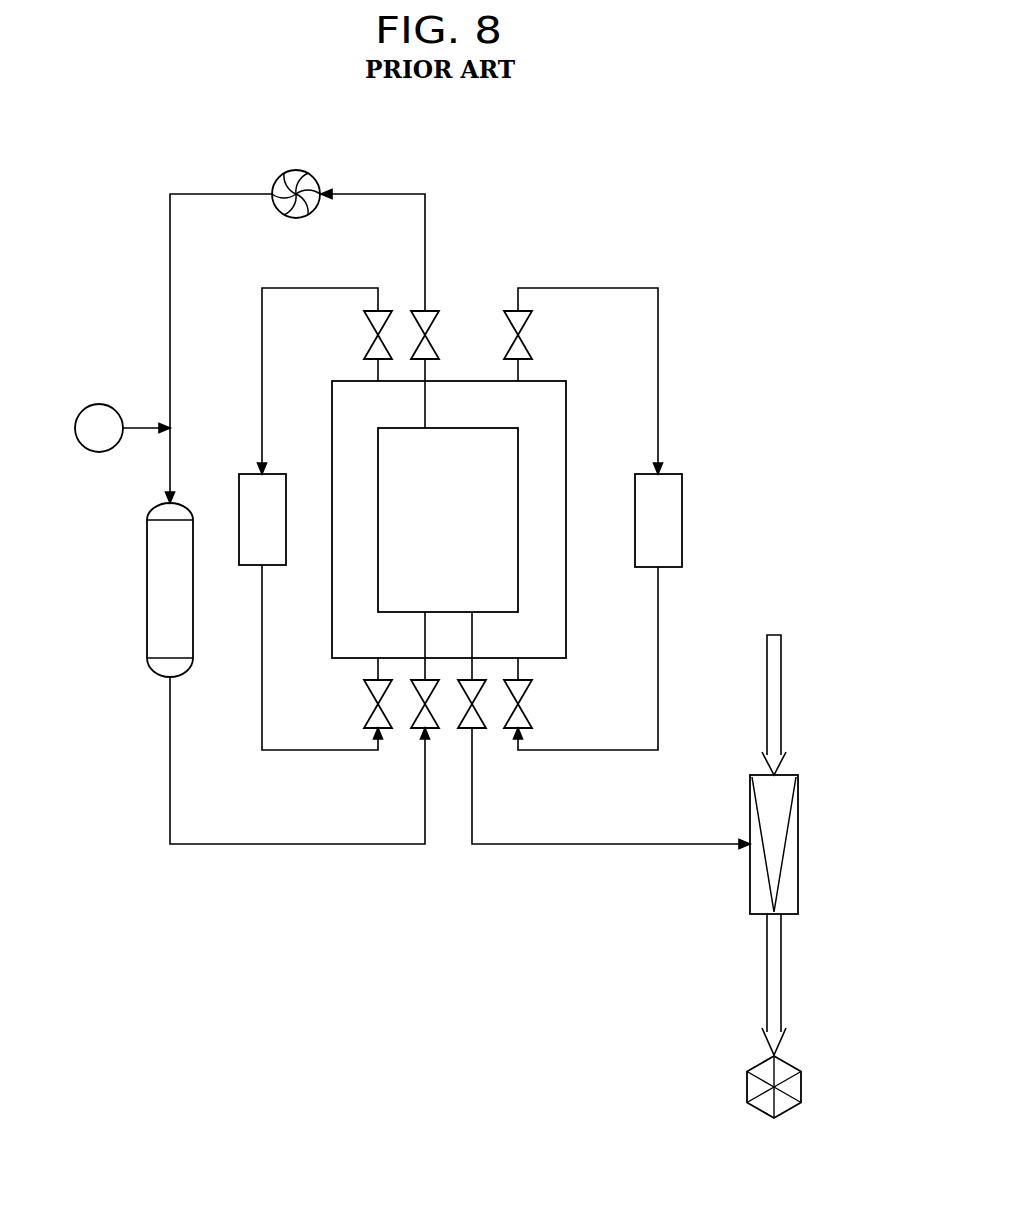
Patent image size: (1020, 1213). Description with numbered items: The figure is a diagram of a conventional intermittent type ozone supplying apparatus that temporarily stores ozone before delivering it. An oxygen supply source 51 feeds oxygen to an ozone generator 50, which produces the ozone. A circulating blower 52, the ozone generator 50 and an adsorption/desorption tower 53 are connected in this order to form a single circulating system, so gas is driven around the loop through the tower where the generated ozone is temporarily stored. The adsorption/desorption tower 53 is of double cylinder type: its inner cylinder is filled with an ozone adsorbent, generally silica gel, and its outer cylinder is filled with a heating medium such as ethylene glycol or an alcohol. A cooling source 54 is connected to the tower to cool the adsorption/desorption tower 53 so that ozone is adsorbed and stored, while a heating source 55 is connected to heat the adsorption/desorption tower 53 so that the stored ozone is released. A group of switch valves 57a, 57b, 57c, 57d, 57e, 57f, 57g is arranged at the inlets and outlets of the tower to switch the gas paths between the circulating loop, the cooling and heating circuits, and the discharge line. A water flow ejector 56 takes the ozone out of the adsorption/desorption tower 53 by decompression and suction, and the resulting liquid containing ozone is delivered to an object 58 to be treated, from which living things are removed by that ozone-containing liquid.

The ozone generator 50 is at (163, 603).
The oxygen supply source 51 is at (93, 415).
The circulating blower 52 is at (288, 177).
The adsorption/desorption tower 53 is at (567, 438).
The cooling source 54 is at (252, 498).
The heating source 55 is at (672, 530).
The water flow ejector 56 is at (758, 902).
The switch valve 57a is at (382, 316).
The switch valve 57b is at (378, 722).
The switch valve 57c is at (427, 316).
The switch valve 57d is at (425, 722).
The switch valve 57e is at (520, 318).
The switch valve 57f is at (472, 722).
The switch valve 57g is at (518, 722).
The object to be treated 58 is at (757, 1087).